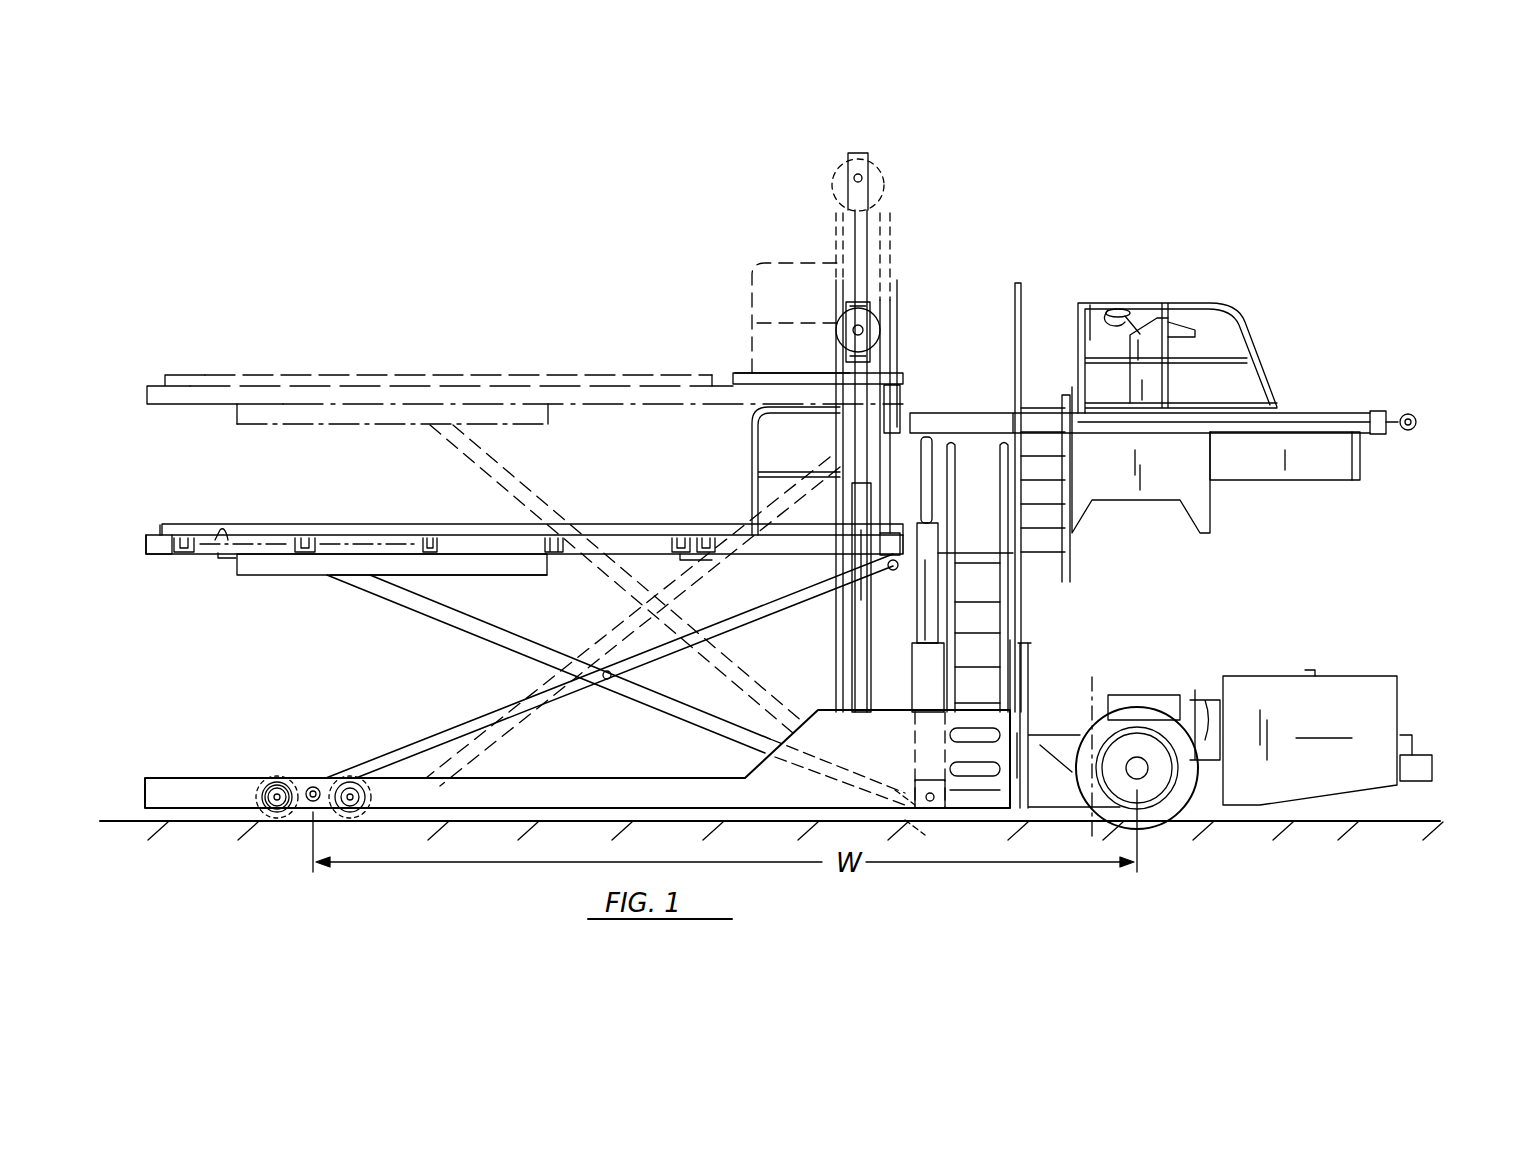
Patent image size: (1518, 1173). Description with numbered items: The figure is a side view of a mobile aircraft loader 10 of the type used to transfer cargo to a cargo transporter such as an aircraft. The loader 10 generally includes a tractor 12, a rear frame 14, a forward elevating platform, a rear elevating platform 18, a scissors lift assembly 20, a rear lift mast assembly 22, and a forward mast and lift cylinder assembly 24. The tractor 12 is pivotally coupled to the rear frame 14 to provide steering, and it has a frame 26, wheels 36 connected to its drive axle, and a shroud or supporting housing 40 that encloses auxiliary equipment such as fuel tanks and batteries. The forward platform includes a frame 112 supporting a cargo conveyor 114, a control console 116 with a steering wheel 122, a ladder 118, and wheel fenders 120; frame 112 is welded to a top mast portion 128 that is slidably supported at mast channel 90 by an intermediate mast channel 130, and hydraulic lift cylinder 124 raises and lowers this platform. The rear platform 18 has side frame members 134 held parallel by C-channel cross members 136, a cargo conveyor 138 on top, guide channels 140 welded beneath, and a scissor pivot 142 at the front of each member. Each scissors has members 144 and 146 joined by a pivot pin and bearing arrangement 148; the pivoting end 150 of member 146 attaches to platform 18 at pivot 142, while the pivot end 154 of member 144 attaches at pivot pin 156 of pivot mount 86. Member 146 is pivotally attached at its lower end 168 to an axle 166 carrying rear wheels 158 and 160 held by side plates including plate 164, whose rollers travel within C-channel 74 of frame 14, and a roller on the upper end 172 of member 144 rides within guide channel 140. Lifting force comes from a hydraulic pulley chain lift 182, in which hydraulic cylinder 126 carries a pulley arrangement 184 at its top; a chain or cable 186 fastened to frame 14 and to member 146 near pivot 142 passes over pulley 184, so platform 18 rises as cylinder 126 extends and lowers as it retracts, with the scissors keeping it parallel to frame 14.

The mobile aircraft loader 10 is at (632, 748).
The tractor 12 is at (1202, 564).
The rear frame 14 is at (525, 812).
The rear elevating platform 18 is at (485, 549).
The scissors lift assembly 20 is at (615, 615).
The rear lift mast assembly 22 is at (552, 467).
The forward mast and lift cylinder assembly 24 is at (1036, 664).
The frame 26 is at (1428, 762).
The wheel 36 is at (1158, 818).
The shroud or supporting housing 40 is at (1252, 737).
The C-channel 74 is at (482, 790).
The pivot mount 86 is at (945, 798).
The mast channel 90 is at (930, 690).
The frame 112 is at (1300, 480).
The cargo conveyor 114 is at (1338, 412).
The control console 116 is at (1165, 330).
The ladder 118 is at (1074, 535).
The wheel fenders 120 is at (1205, 518).
The steering wheel 122 is at (1112, 318).
The hydraulic lift cylinder 124 is at (1040, 644).
The hydraulic cylinder 126 is at (845, 652).
The top mast portion 128 is at (935, 432).
The intermediate mast channel 130 is at (879, 432).
The side frame members 134 is at (147, 545).
The C-channel cross members 136 is at (180, 538).
The cargo conveyor 138 is at (172, 530).
The guide channels 140 is at (256, 560).
The scissor pivot 142 is at (893, 580).
The scissor member 144 is at (528, 640).
The scissor member 146 is at (542, 705).
The pivot pin and bearing arrangement 148 is at (608, 680).
The pivoting end 150 is at (848, 605).
The pivot end 154 is at (930, 814).
The pivot pin 156 is at (948, 826).
The rear wheel 158 is at (368, 810).
The rear wheel 160 is at (258, 812).
The side plate 164 is at (278, 786).
The axle 166 is at (315, 786).
The lower end 168 is at (296, 788).
The upper end 172 is at (358, 580).
The hydraulic pulley chain lift 182 is at (878, 336).
The pulley arrangement 184 is at (864, 300).
The chain or cable 186 is at (830, 350).